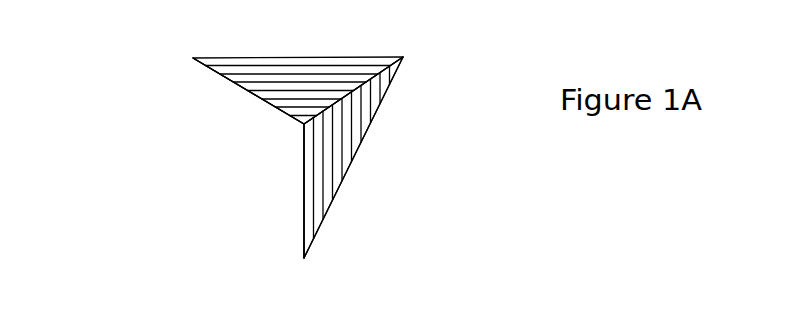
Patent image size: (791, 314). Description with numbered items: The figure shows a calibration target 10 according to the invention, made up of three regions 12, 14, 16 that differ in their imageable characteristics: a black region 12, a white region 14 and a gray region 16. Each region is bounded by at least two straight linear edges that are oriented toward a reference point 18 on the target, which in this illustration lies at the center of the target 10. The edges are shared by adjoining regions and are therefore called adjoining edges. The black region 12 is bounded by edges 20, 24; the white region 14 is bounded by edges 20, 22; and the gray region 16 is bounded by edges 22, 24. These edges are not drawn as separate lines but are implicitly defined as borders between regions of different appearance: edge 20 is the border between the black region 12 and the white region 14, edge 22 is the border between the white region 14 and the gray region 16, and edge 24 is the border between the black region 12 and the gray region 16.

The target 10 is at (150, 144).
The region 12 is at (300, 78).
The region 14 is at (268, 149).
The region 16 is at (363, 142).
The reference point 18 is at (350, 169).
The edge 20 is at (238, 83).
The edge 22 is at (303, 190).
The edge 24 is at (383, 98).